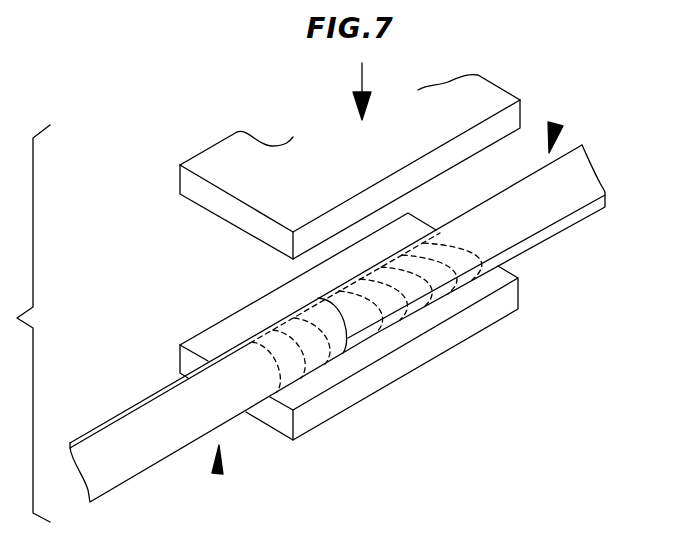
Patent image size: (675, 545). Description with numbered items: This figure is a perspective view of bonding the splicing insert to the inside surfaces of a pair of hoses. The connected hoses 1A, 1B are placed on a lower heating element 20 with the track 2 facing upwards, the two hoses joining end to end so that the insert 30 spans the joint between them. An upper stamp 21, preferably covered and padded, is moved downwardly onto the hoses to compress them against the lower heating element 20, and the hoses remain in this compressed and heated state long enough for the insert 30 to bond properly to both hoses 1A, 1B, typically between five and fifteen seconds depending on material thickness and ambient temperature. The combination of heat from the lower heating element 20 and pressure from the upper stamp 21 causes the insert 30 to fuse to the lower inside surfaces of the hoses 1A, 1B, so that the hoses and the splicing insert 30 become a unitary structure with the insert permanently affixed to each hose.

The track 2 is at (168, 387).
The lower heating element 20 is at (388, 385).
The upper stamp 21 is at (522, 110).
The splicing insert 30 is at (400, 318).
The hose 1A is at (218, 474).
The hose 1B is at (556, 124).